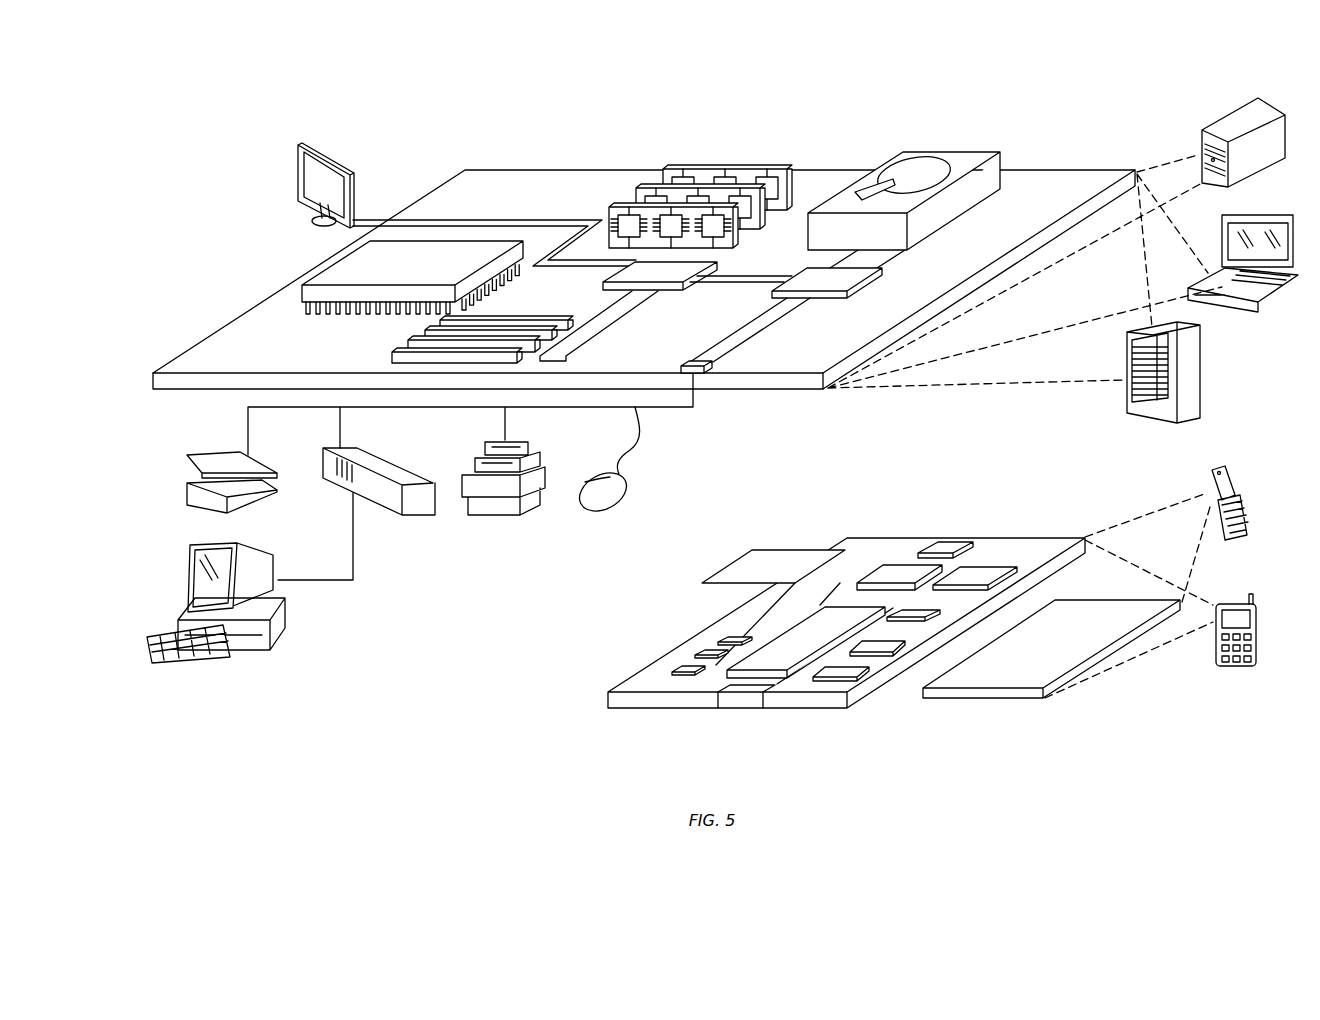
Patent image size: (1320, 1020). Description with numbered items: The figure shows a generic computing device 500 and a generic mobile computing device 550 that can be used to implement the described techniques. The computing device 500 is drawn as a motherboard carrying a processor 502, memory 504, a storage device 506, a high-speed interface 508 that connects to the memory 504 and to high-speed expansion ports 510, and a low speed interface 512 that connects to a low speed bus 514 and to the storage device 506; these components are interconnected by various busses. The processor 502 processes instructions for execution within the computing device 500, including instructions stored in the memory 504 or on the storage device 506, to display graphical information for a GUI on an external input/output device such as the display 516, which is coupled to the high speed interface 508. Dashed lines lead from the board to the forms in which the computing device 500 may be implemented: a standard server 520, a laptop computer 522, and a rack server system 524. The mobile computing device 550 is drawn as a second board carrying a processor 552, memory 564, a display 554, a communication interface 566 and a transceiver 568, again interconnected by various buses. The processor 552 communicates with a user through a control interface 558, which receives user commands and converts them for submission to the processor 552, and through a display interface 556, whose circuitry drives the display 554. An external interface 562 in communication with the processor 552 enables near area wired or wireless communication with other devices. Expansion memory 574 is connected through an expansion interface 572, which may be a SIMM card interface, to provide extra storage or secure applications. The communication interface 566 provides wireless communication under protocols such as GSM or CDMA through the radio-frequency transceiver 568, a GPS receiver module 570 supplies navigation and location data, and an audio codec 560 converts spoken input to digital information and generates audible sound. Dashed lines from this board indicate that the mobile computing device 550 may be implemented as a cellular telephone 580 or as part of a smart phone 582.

The computing device 500 is at (424, 129).
The processor 502 is at (323, 268).
The memory 504 is at (734, 171).
The storage device 506 is at (944, 152).
The high-speed interface 508 is at (671, 270).
The high-speed expansion ports 510 is at (416, 344).
The low speed interface 512 is at (800, 277).
The low speed bus 514 is at (697, 360).
The display 516 is at (304, 143).
The standard server 520 is at (1221, 124).
The laptop computer 522 is at (1275, 214).
The rack server system 524 is at (1200, 371).
The mobile computing device 550 is at (571, 711).
The processor 552 is at (777, 648).
The display 554 is at (1086, 618).
The display interface 556 is at (848, 668).
The control interface 558 is at (883, 648).
The audio codec 560 is at (918, 617).
The external interface 562 is at (742, 692).
The memory 564 is at (700, 653).
The communication interface 566 is at (895, 568).
The transceiver 568 is at (980, 570).
The GPS receiver module 570 is at (945, 543).
The expansion interface 572 is at (830, 550).
The expansion memory 574 is at (753, 550).
The cellular telephone 580 is at (1220, 470).
The smart phone 582 is at (1230, 603).